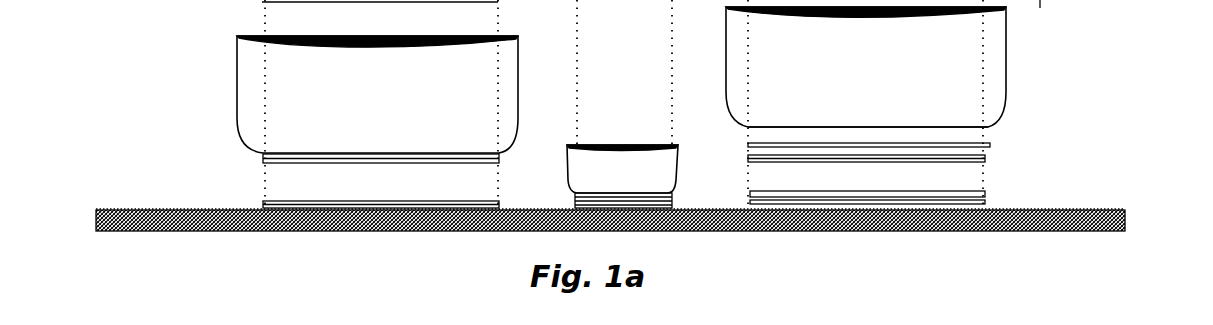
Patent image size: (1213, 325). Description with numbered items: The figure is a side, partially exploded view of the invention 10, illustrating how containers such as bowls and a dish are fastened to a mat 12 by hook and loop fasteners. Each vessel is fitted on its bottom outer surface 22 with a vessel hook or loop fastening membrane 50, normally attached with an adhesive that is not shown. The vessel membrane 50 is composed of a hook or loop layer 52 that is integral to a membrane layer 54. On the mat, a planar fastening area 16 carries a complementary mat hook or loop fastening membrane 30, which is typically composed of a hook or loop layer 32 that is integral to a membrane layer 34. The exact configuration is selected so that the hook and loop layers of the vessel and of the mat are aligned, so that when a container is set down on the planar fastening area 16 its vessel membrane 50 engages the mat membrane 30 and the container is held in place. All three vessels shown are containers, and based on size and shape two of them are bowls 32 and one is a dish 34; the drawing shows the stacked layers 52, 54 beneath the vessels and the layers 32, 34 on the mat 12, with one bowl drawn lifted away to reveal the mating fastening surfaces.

The display device 10 is at (1053, 59).
The substrate 12 is at (131, 212).
The planar fastening area 16 is at (672, 47).
The bottom outer surface 22 is at (877, 127).
The mat hook or loop fastening membrane 30 is at (470, 185).
The hook or loop layer 32 is at (232, 37).
The membrane layer 34 is at (636, 177).
The vessel hook or loop fastening membrane 50 is at (347, 163).
The hook or loop layer 52 is at (750, 157).
The membrane layer 54 is at (752, 145).